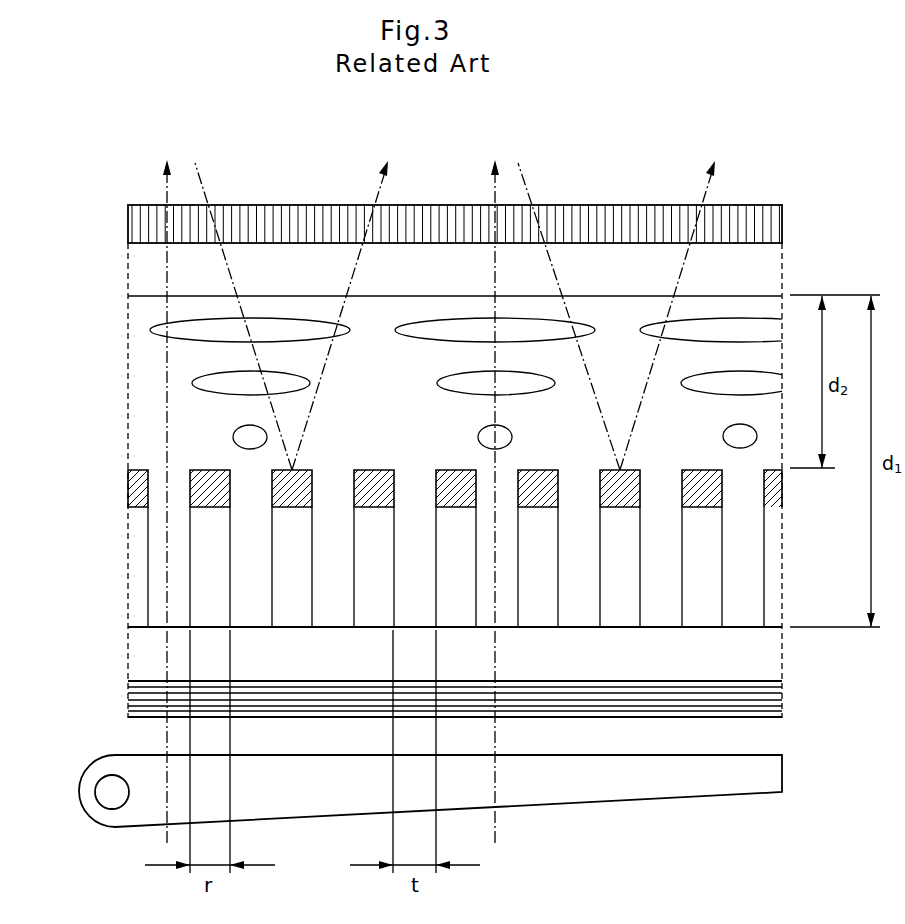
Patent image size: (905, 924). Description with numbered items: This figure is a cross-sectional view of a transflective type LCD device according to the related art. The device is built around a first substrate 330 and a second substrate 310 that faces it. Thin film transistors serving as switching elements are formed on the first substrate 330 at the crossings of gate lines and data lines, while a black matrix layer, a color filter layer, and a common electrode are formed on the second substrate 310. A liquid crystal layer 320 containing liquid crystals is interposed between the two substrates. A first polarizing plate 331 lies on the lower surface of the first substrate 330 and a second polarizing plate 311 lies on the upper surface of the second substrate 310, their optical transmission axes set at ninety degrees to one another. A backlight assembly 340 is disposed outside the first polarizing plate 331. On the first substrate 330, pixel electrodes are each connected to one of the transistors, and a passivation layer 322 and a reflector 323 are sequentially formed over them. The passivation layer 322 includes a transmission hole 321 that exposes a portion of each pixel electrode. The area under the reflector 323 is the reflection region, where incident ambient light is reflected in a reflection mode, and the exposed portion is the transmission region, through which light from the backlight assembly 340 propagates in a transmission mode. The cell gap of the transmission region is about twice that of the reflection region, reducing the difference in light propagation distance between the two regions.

The second substrate 310 is at (768, 277).
The second polarizing plate 311 is at (780, 220).
The liquid crystal layer 320 is at (119, 305).
The transmission hole 321 is at (157, 475).
The passivation layer 322 is at (205, 563).
The reflector 323 is at (207, 497).
The first substrate 330 is at (770, 650).
The first polarizing plate 331 is at (762, 697).
The backlight assembly 340 is at (64, 755).